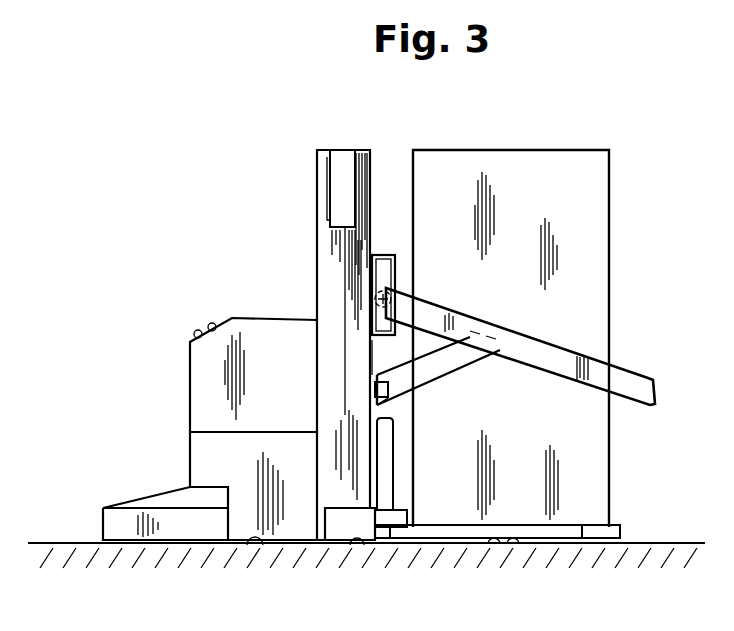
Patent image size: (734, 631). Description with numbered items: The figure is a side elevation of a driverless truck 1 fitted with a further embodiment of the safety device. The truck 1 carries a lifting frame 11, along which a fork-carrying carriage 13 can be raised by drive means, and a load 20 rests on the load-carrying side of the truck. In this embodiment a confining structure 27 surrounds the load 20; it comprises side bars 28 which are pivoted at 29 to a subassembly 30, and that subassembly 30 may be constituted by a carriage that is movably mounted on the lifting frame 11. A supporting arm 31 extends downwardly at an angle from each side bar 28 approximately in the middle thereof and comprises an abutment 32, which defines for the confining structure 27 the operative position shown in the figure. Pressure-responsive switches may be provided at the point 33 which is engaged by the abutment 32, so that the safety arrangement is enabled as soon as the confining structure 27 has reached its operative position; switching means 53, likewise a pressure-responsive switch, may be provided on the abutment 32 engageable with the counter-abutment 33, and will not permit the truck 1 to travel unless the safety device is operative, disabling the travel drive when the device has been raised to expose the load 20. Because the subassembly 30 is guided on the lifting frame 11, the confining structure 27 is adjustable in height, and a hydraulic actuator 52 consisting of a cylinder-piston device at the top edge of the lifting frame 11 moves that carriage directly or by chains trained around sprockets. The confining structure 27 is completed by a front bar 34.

The driverless truck 1 is at (190, 448).
The lifting frame 11 is at (354, 174).
The fork-carrying carriage 13 is at (377, 478).
The load 20 is at (565, 183).
The confining structure 27 is at (595, 377).
The side bars 28 is at (562, 348).
The pivot 29 is at (376, 297).
The subassembly 30 is at (375, 268).
The supporting arm 31 is at (433, 372).
The abutment 32 is at (388, 398).
The counter-abutment 33 is at (375, 388).
The front bar 34 is at (656, 390).
The hydraulic actuator 52 is at (330, 191).
The switching means 53 is at (375, 375).